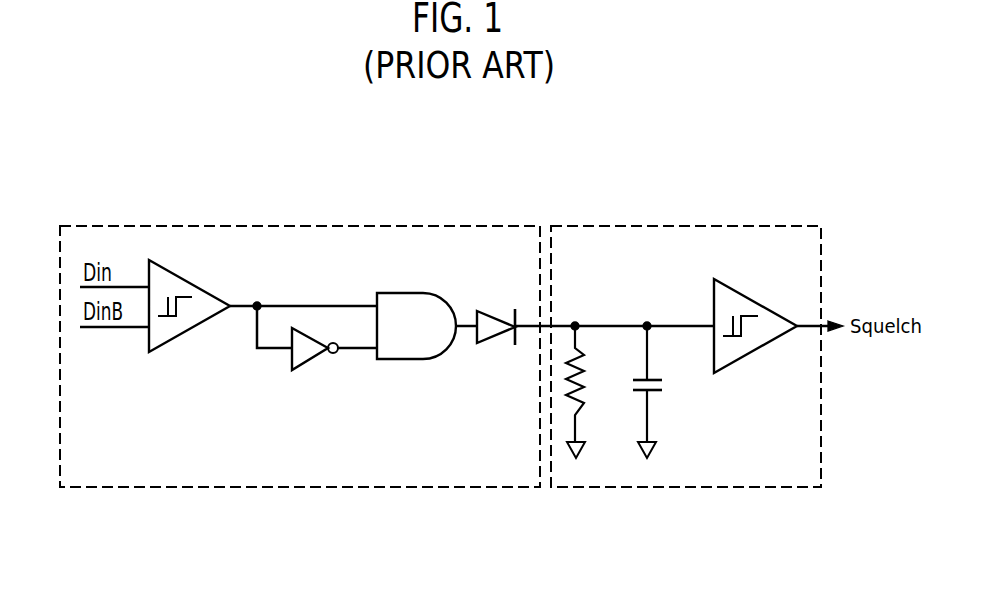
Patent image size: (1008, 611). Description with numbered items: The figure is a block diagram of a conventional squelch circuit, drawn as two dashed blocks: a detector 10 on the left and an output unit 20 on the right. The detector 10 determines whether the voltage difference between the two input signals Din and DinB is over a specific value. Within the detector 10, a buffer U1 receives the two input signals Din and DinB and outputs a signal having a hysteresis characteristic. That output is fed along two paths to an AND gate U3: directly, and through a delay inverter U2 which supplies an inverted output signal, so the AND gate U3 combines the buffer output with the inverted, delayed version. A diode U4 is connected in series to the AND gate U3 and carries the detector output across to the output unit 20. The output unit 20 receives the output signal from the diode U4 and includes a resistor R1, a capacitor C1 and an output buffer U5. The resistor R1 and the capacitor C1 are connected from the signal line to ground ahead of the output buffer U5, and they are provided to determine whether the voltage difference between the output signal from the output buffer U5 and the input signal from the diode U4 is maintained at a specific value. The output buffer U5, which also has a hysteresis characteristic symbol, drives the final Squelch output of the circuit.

The detector 10 is at (392, 227).
The output unit 20 is at (712, 226).
The buffer U1 is at (188, 281).
The delay inverter U2 is at (311, 358).
The AND gate U3 is at (427, 326).
The diode U4 is at (500, 334).
The output buffer U5 is at (752, 300).
The resistor R1 is at (589, 392).
The capacitor C1 is at (661, 392).